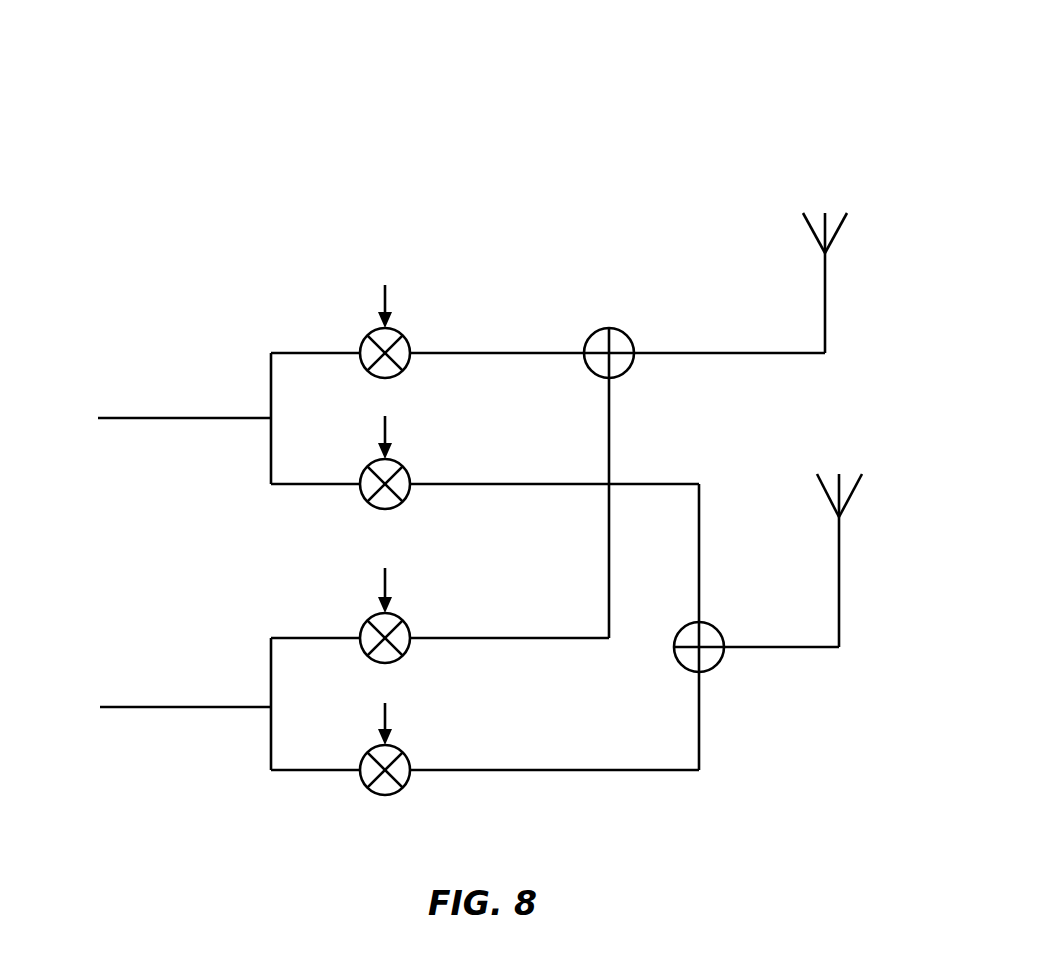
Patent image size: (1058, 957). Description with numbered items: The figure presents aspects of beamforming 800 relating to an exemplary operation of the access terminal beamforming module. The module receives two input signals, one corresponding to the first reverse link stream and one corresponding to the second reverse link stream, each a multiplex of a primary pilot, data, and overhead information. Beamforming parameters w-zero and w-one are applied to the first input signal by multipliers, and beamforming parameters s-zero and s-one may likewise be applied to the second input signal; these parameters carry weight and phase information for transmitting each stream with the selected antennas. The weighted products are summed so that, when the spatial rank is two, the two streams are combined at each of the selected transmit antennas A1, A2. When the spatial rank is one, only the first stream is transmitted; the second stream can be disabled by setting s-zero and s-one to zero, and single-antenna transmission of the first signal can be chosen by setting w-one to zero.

The beamforming 800 is at (462, 406).
The transmit antenna A1 is at (844, 283).
The transmit antenna A2 is at (851, 560).